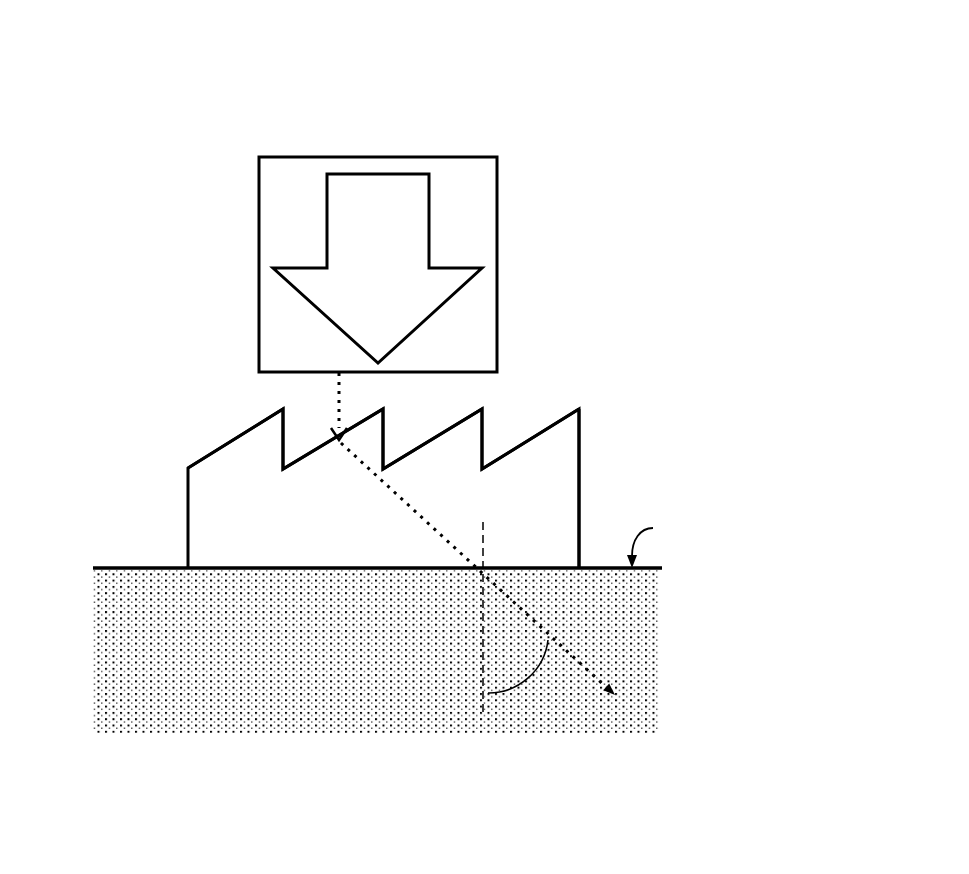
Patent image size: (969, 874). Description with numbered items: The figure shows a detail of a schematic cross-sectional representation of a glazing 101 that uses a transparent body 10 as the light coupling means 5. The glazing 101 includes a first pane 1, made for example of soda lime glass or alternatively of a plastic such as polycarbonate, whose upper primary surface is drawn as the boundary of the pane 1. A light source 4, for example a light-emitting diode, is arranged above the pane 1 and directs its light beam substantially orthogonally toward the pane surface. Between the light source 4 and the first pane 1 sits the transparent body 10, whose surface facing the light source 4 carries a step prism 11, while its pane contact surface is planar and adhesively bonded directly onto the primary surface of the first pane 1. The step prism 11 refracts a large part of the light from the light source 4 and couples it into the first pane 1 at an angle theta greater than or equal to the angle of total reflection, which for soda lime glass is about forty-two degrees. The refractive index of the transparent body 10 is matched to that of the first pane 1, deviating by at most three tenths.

The glazing 101 is at (130, 109).
The light source 4 is at (498, 232).
The transparent body 10 is at (245, 530).
The step prism 11 is at (253, 450).
The coupling means 5 is at (545, 515).
The first pane 1 is at (170, 640).